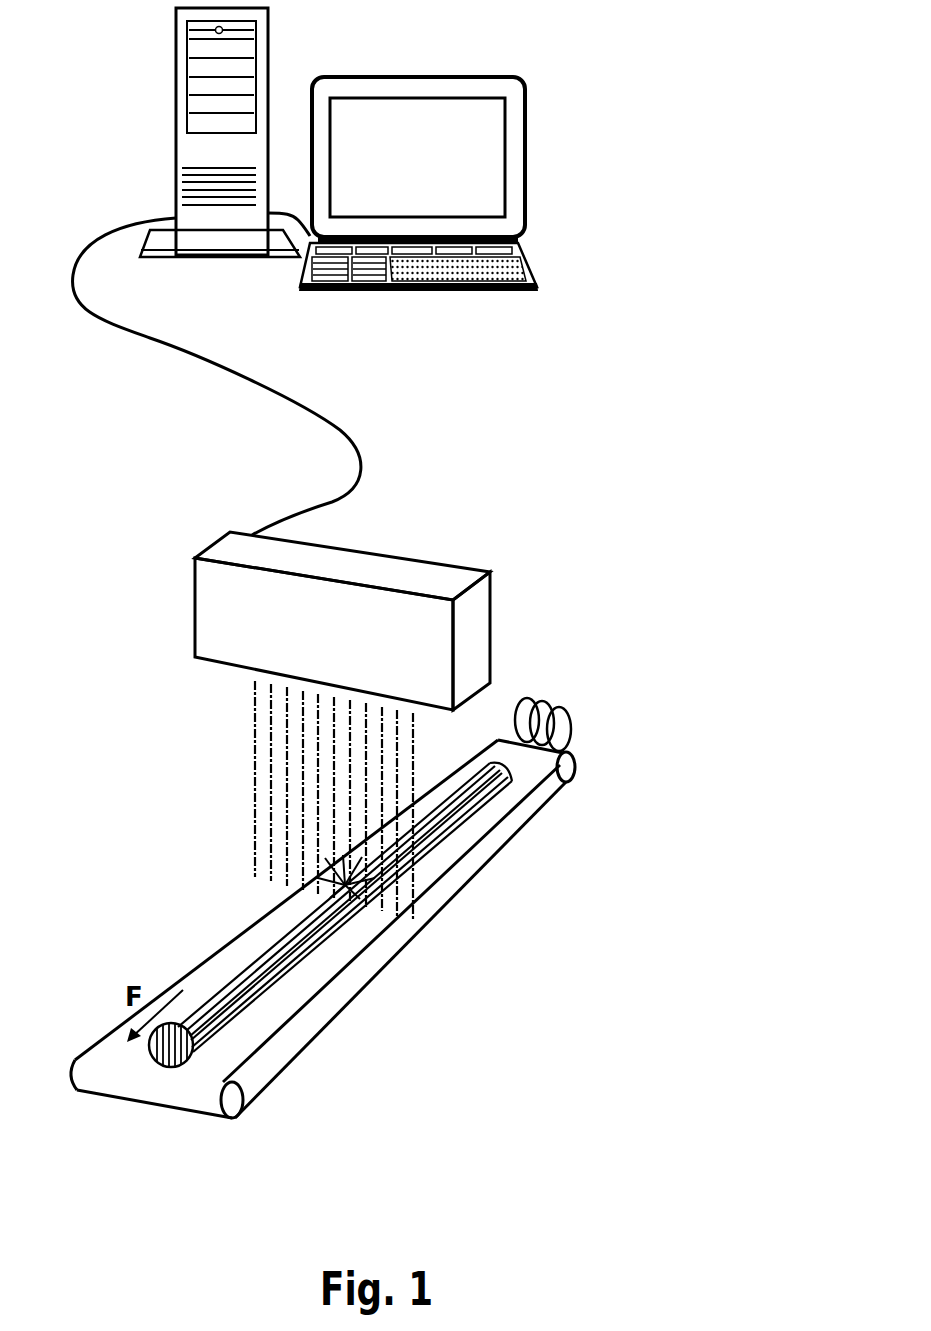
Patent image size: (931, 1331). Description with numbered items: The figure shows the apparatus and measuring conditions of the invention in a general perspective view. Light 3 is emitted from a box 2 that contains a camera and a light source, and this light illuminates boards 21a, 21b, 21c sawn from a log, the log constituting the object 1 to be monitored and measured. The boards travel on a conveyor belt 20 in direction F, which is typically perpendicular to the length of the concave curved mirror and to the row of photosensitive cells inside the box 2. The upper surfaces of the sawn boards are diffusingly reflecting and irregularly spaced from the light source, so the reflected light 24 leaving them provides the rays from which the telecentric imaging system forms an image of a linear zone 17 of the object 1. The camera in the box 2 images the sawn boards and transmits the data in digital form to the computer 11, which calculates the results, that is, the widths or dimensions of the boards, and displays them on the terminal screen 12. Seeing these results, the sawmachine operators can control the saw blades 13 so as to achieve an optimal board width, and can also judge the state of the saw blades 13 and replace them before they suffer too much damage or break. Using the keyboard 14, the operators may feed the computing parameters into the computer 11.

The computer 11 is at (200, 63).
The terminal screen 12 is at (483, 155).
The keyboard 14 is at (525, 262).
The box 2 is at (233, 617).
The light 3 is at (255, 770).
The saw blades 13 is at (567, 724).
The object 1 is at (252, 972).
The reflected light 24 is at (380, 883).
The linear zone 17 is at (425, 921).
The conveyor belt 20 is at (346, 948).
The board 21a is at (152, 1060).
The board 21b is at (172, 1066).
The board 21c is at (183, 1066).